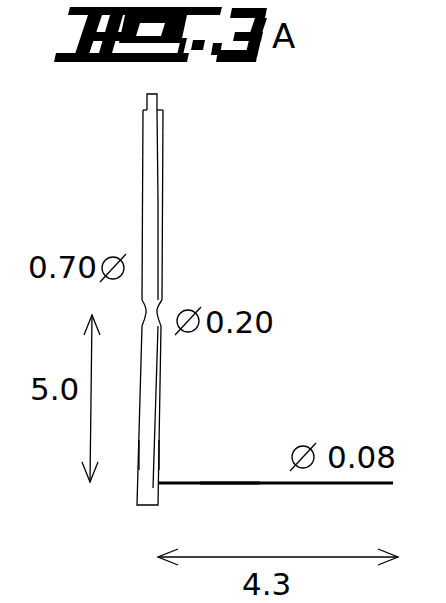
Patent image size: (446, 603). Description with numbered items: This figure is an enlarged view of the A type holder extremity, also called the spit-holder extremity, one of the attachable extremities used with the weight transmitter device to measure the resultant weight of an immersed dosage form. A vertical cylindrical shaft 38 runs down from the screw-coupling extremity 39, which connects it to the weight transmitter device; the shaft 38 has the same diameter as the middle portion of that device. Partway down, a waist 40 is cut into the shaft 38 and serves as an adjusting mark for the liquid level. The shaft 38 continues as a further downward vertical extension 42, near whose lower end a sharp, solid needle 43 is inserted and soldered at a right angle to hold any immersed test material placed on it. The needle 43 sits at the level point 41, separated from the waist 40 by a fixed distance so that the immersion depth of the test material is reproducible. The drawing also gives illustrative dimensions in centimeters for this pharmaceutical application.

The vertical cylindrical shaft 38 is at (163, 170).
The screw-coupling extremity 39 is at (157, 100).
The waist 40 is at (157, 313).
The level point 41 is at (378, 490).
The downward vertical extension 42 is at (159, 440).
The sharp solid needle 43 is at (232, 483).